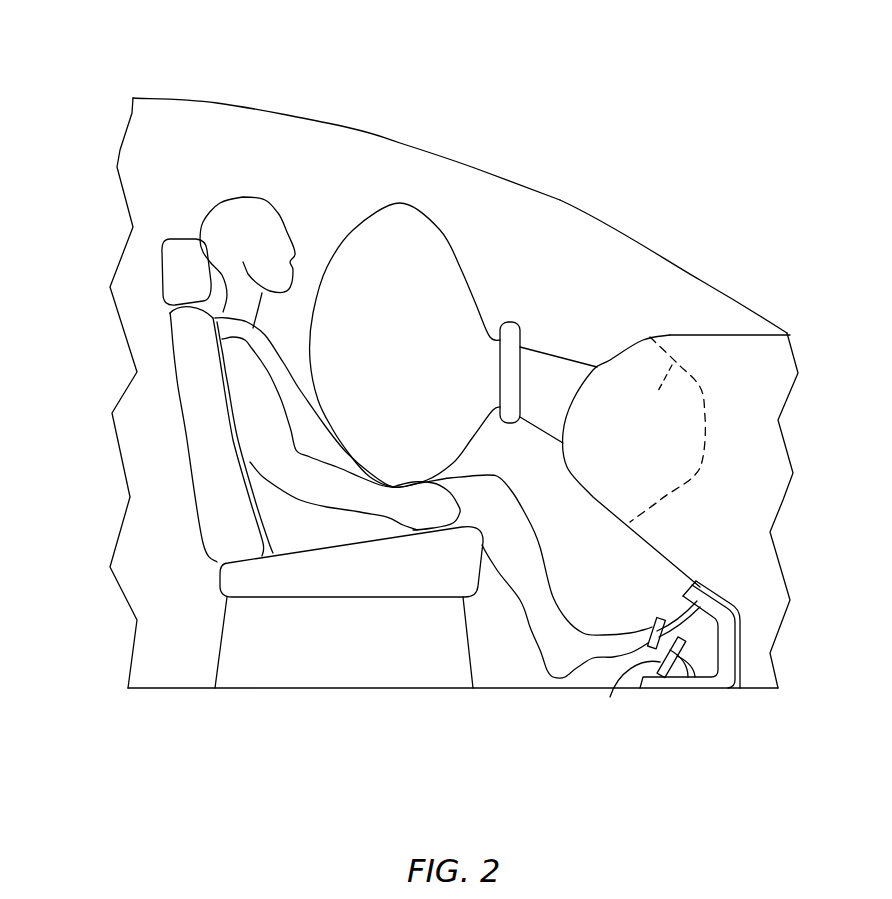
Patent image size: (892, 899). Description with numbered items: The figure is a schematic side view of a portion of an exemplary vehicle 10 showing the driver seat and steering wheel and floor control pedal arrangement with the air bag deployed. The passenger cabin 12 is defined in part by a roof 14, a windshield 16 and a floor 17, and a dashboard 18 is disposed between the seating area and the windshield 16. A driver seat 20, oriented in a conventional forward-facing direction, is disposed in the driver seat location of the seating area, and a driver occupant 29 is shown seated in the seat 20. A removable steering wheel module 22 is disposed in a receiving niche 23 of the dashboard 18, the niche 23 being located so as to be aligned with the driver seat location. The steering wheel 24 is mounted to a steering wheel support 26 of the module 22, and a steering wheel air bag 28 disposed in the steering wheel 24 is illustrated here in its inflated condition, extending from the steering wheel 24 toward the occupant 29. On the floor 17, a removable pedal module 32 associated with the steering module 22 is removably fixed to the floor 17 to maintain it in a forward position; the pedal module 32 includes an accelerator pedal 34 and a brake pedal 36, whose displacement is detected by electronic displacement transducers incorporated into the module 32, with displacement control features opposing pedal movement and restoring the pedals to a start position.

The vehicle 10 is at (606, 80).
The passenger cabin 12 is at (550, 237).
The roof 14 is at (217, 103).
The windshield 16 is at (675, 268).
The floor 17 is at (507, 688).
The dashboard 18 is at (722, 334).
The driver seat 20 is at (220, 585).
The removable steering wheel module 22 is at (552, 355).
The receiving niche 23 is at (657, 393).
The steering wheel 24 is at (510, 321).
The steering wheel support 26 is at (577, 358).
The steering wheel air bag 28 is at (402, 205).
The driver occupant 29 is at (243, 197).
The removable pedal module 32 is at (701, 688).
The accelerator pedal 34 is at (643, 662).
The brake pedal 36 is at (655, 620).